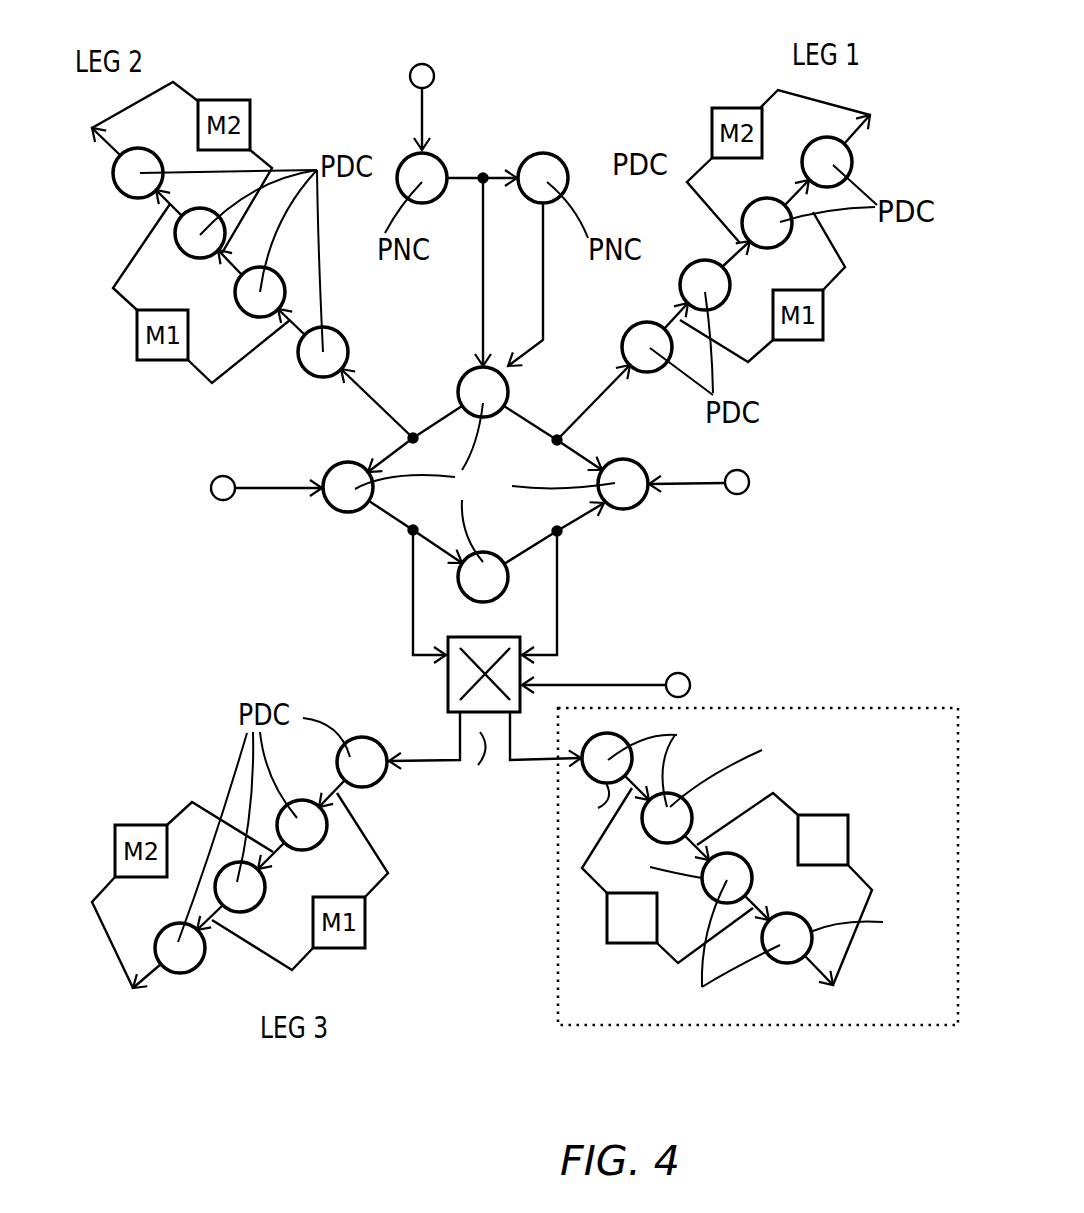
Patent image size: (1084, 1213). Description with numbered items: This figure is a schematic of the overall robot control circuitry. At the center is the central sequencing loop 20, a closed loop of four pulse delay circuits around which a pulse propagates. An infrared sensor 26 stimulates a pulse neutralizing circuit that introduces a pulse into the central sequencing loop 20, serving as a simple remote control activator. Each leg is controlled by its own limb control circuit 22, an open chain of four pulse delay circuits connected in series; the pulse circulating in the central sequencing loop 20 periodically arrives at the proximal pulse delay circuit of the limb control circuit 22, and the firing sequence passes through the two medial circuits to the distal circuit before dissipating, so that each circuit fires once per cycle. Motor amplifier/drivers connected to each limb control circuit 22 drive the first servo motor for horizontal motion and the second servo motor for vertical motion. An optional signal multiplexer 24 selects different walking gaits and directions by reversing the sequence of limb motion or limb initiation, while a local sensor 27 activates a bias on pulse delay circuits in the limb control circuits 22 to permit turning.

The central sequencing loop 20 is at (580, 522).
The limb control circuit 22 is at (547, 868).
The signal multiplexer 24 is at (448, 680).
The infrared sensor 26 is at (435, 73).
The local sensor 27 is at (220, 493).